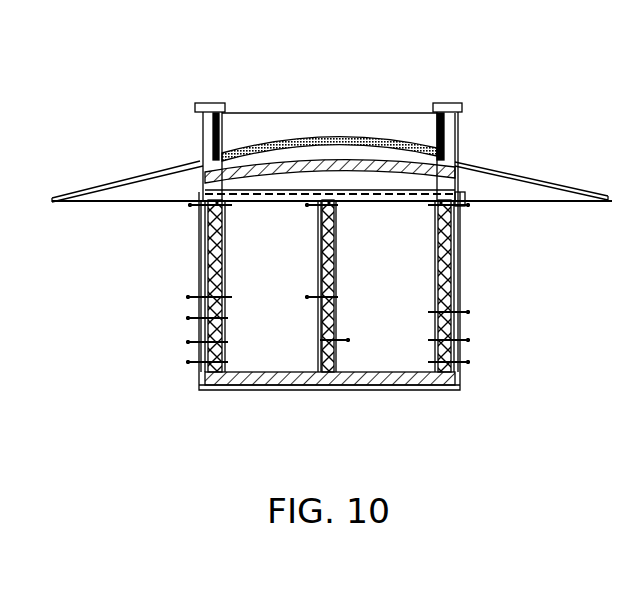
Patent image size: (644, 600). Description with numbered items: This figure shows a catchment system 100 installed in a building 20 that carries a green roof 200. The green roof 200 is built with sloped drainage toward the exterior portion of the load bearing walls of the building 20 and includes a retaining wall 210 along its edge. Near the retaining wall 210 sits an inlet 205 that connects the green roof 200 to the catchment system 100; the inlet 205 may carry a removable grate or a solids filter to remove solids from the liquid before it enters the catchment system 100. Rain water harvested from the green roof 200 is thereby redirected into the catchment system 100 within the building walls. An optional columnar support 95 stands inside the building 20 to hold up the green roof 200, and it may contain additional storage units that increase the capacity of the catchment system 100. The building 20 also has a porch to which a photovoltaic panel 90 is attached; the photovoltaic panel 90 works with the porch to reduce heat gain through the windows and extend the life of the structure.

The building 20 is at (172, 249).
The photovoltaic panel 90 is at (563, 185).
The columnar support 95 is at (318, 340).
The catchment system 100 is at (466, 284).
The green roof 200 is at (380, 148).
The inlet 205 is at (458, 164).
The retaining wall 210 is at (203, 126).